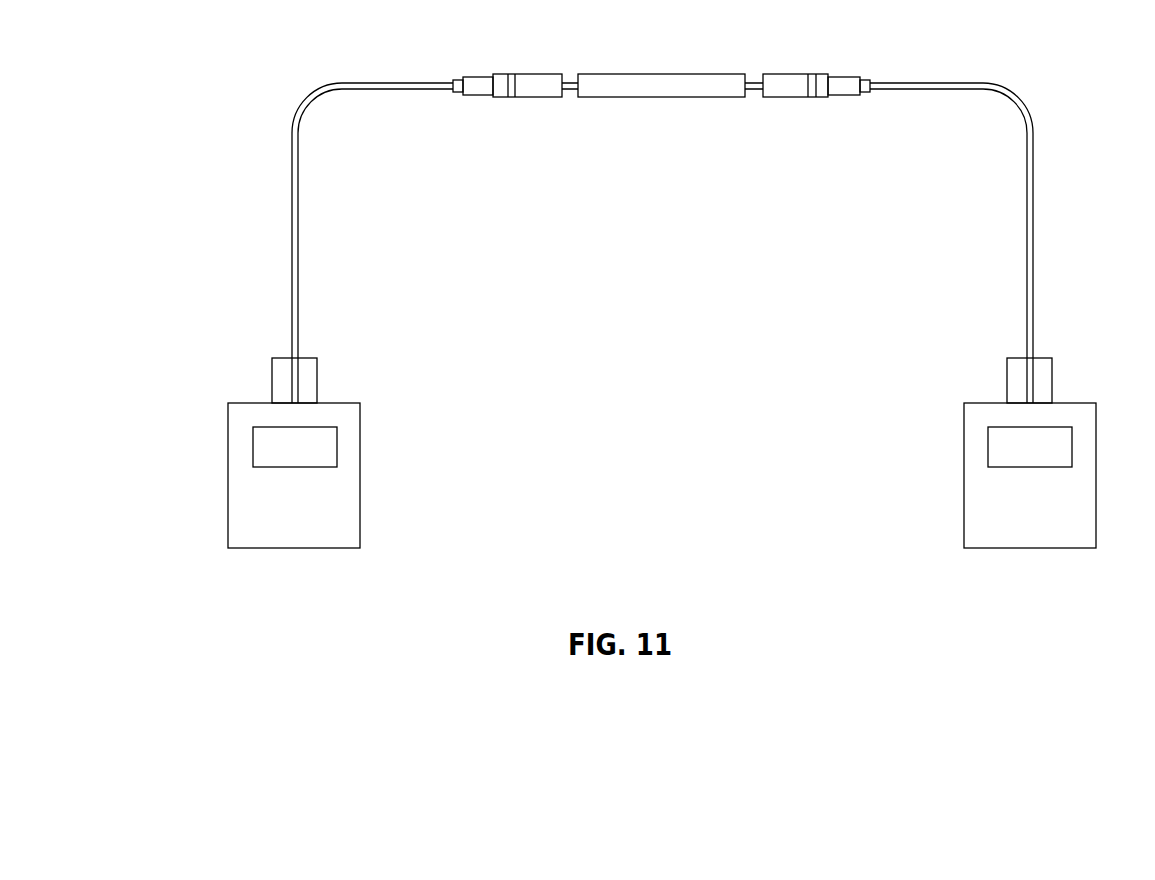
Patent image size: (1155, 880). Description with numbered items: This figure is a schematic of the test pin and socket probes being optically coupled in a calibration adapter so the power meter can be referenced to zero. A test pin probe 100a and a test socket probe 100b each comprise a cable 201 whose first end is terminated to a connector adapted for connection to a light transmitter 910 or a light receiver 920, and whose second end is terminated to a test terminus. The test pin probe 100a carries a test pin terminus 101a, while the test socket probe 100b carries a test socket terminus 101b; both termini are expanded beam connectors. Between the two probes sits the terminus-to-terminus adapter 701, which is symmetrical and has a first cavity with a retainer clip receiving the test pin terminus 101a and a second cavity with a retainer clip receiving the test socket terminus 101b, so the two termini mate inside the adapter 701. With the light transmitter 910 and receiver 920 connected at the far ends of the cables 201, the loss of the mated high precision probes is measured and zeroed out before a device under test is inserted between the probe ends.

The test pin probe 100a is at (290, 282).
The test socket probe 100b is at (1027, 282).
The cable 201 is at (290, 209).
The test pin terminus 101a is at (540, 75).
The test socket terminus 101b is at (790, 75).
The terminus-to-terminus adapter 701 is at (665, 78).
The light transmitter 910 is at (240, 473).
The light receiver 920 is at (972, 473).